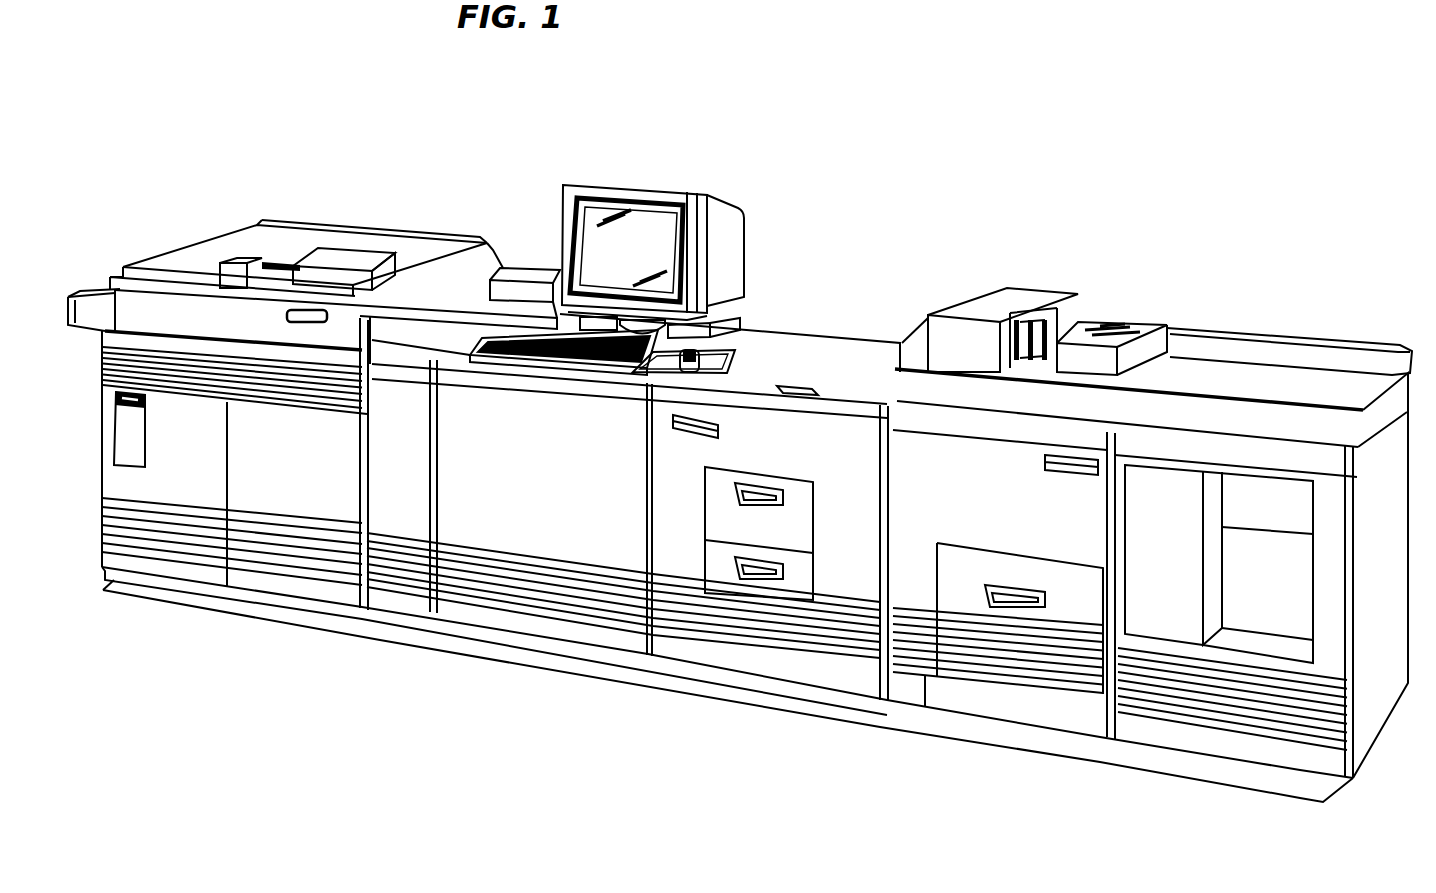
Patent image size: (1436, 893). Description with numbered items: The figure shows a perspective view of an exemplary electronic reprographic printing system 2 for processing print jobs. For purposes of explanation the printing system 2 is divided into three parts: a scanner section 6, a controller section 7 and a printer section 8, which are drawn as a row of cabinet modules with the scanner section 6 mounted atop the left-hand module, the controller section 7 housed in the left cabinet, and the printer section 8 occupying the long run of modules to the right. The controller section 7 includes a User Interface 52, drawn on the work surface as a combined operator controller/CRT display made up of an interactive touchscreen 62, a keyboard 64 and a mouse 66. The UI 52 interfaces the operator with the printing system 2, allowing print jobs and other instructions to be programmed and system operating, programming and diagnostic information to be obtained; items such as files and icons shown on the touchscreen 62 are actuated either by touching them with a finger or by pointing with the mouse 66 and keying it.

The electronic reprographic printing system 2 is at (888, 102).
The scanner section 6 is at (357, 196).
The controller section 7 is at (80, 468).
The printer section 8 is at (1352, 800).
The User Interface (UI) 52 is at (633, 232).
The interactive touchscreen 62 is at (593, 257).
The keyboard 64 is at (552, 372).
The mouse 66 is at (645, 380).